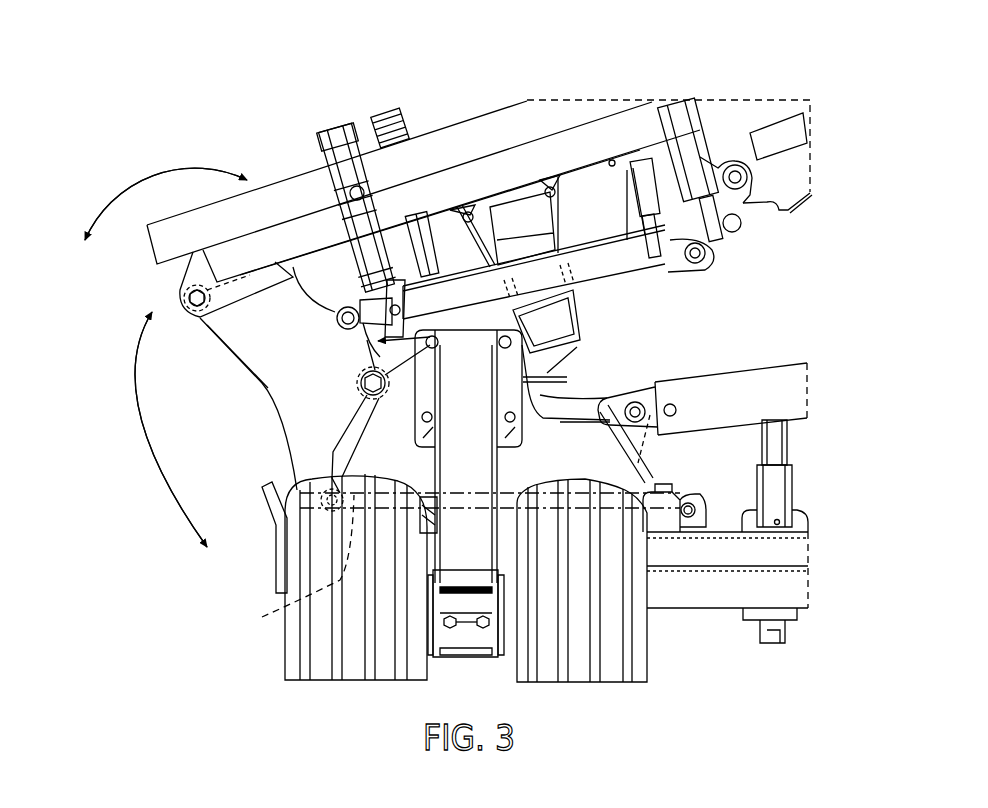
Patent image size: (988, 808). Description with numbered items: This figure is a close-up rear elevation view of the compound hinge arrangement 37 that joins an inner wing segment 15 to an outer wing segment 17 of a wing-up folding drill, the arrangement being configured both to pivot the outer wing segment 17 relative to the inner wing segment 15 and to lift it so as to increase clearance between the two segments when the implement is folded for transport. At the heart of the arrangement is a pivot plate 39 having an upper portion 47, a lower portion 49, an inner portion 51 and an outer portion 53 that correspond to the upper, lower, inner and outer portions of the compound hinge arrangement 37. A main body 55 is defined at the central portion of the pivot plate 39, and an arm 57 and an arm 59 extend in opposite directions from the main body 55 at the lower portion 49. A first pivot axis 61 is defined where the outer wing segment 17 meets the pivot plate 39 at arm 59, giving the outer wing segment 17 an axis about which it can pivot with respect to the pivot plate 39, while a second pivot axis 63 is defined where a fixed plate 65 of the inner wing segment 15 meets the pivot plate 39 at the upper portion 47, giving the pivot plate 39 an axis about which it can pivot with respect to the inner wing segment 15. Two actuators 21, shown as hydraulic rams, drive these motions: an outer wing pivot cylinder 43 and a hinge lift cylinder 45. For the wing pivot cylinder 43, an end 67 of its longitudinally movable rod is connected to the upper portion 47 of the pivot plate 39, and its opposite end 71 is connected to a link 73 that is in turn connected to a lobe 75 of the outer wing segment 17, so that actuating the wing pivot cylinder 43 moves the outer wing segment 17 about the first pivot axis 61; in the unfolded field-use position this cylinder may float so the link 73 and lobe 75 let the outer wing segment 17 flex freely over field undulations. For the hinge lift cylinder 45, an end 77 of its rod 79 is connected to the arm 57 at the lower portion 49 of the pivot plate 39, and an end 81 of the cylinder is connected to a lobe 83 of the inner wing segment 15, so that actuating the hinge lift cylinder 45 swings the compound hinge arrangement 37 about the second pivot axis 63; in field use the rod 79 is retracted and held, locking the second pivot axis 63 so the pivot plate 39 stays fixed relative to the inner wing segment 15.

The inner wing segment 15 is at (712, 624).
The outer wing segment 17 is at (451, 126).
The actuator 21 is at (579, 243).
The compound hinge arrangement 37 is at (590, 348).
The pivot plate 39 is at (275, 362).
The outer wing pivot cylinder 43 is at (467, 290).
The hinge lift cylinder 45 is at (653, 512).
The upper portion 47 is at (438, 344).
The lower portion 49 is at (287, 484).
The inner portion 51 is at (364, 454).
The outer portion 53 is at (258, 258).
The main body 55 is at (300, 395).
The arm 57 is at (300, 478).
The arm 59 is at (202, 325).
The first pivot axis 61 is at (190, 297).
The second pivot axis 63 is at (363, 377).
The fixed plate 65 is at (620, 460).
The end 67 is at (367, 303).
The end 71 is at (680, 260).
The link 73 is at (722, 238).
The lobe 75 is at (780, 197).
The end 77 is at (294, 564).
The rod 79 is at (467, 497).
The end 81 is at (693, 502).
The lobe 83 is at (695, 525).